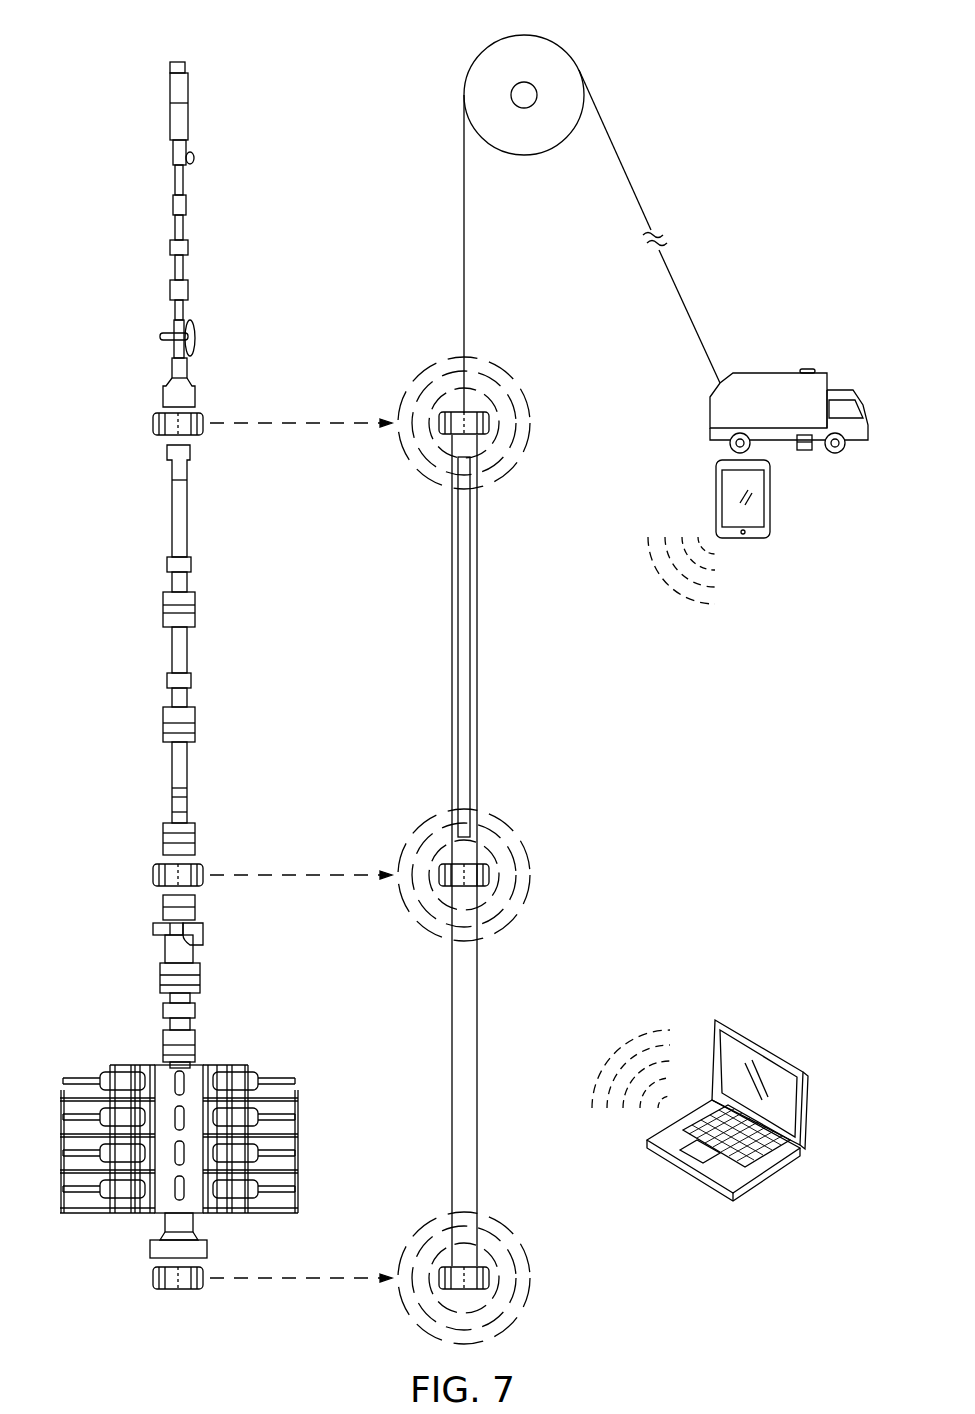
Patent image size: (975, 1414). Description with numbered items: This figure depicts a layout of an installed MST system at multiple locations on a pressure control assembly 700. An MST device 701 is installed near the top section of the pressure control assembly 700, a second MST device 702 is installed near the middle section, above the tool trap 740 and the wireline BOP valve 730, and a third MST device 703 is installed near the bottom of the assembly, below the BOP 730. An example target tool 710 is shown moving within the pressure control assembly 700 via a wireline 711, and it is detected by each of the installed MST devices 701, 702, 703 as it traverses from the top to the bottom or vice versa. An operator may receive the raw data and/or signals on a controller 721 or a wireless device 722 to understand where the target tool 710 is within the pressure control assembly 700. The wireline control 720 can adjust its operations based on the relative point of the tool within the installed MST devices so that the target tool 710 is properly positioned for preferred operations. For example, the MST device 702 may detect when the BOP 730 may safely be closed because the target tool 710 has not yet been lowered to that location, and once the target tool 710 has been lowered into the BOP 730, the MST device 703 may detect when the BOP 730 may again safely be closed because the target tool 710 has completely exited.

The pressure control assembly 700 is at (84, 72).
The MST device 701 is at (138, 421).
The MST device 702 is at (138, 877).
The MST device 703 is at (138, 1279).
The target tool 710 is at (465, 650).
The wireline 711 is at (463, 253).
The wireline control 720 is at (775, 372).
The controller 721 is at (765, 1178).
The wireless device 722 is at (756, 540).
The wireline BOP valve 730 is at (318, 1140).
The tool trap 740 is at (218, 934).